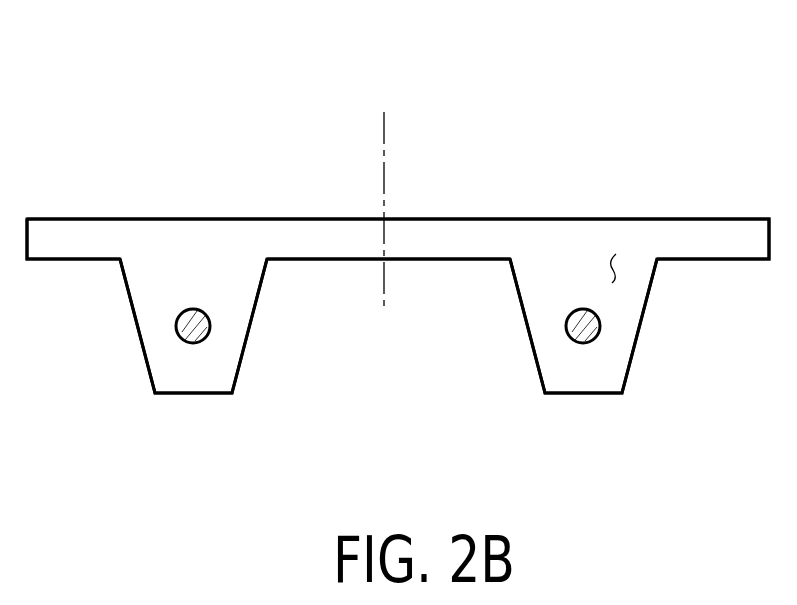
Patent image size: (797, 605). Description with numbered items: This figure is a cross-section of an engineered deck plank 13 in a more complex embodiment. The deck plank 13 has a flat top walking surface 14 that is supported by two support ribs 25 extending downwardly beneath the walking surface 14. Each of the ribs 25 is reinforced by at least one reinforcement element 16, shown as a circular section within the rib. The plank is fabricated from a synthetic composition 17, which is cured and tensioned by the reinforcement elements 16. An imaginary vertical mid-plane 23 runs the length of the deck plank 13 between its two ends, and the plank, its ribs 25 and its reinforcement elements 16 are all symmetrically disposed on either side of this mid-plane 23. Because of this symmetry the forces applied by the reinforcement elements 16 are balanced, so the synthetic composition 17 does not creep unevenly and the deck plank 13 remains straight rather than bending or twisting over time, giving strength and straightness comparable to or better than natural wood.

The engineered deck plank 13 is at (670, 151).
The flat top walking surface 14 is at (443, 219).
The reinforcement elements 16 is at (602, 325).
The synthetic composition 17 is at (616, 266).
The imaginary vertical mid-plane 23 is at (382, 127).
The support ribs 25 is at (541, 273).